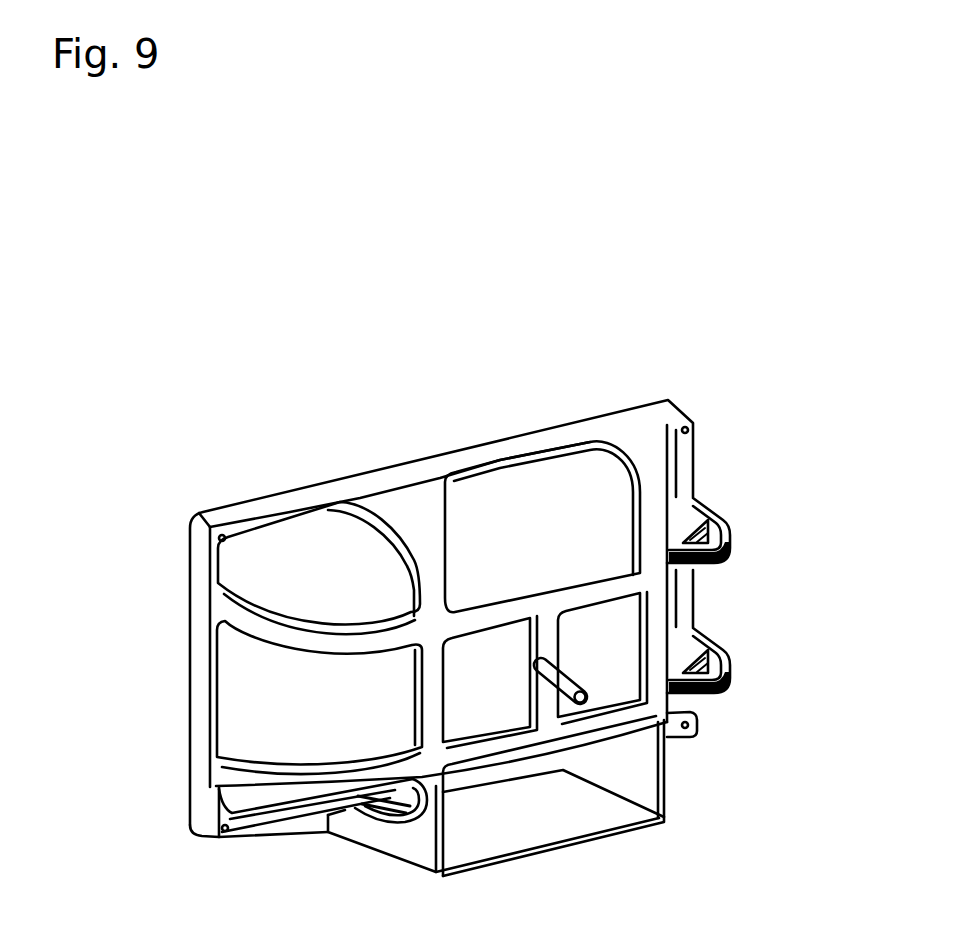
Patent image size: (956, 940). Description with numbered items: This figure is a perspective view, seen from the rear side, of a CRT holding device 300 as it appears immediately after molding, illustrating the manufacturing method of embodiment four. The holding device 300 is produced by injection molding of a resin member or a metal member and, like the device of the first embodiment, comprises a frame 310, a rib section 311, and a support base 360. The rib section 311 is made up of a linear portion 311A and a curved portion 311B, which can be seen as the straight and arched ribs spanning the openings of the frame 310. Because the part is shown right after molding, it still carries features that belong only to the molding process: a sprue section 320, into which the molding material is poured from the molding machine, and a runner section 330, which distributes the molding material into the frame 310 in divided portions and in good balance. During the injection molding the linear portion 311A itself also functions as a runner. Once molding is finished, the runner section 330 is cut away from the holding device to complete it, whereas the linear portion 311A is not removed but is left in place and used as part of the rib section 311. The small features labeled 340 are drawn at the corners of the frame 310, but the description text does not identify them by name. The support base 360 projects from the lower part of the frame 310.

The CRT holding device 300 is at (504, 263).
The frame 310 is at (647, 417).
The rib section 311 is at (480, 363).
The linear portion 311A is at (490, 727).
The curved portion 311B is at (281, 636).
The sprue section 320 is at (580, 687).
The runner section 330 is at (560, 632).
The mounting holes 340 is at (690, 429).
The support base 360 is at (607, 810).